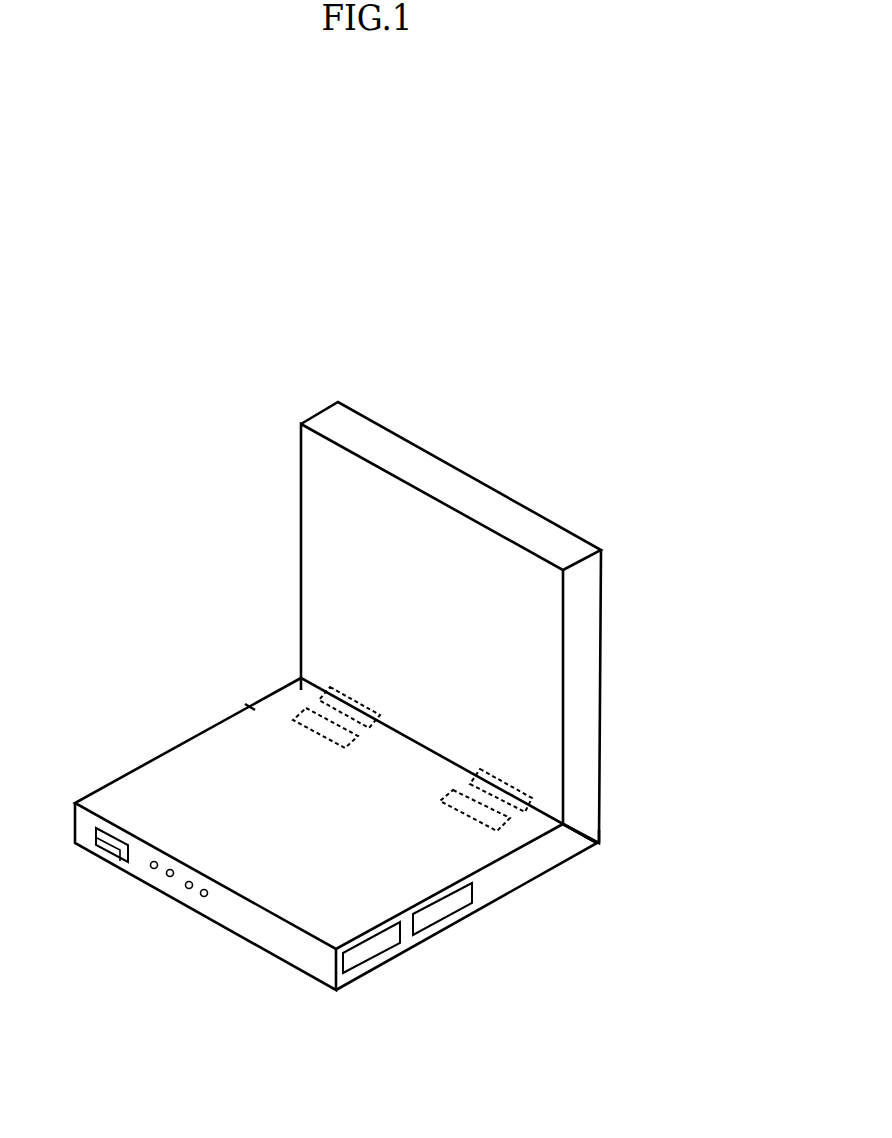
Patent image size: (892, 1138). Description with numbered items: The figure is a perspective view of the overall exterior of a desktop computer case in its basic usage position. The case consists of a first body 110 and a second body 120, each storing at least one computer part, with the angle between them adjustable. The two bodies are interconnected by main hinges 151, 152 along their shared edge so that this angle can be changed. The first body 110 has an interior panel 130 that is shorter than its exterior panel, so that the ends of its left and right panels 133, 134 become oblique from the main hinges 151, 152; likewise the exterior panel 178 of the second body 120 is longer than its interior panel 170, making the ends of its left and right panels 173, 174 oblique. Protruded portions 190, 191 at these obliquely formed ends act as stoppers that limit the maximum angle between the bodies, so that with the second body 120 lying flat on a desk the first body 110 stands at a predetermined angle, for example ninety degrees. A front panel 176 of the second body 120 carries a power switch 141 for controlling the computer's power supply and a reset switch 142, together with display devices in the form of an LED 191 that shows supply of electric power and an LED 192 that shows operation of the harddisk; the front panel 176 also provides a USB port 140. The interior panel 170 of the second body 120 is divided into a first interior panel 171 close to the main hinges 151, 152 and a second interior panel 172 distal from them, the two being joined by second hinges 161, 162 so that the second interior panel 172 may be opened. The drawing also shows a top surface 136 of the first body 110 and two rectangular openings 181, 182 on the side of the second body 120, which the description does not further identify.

The first body 110 is at (620, 658).
The second body 120 is at (500, 921).
The interior panel 130 is at (480, 556).
The left panel 133 is at (317, 485).
The right panel 134 is at (598, 577).
The top surface of display unit 136 is at (367, 423).
The USB port 140 is at (112, 848).
The power switch 141 is at (189, 888).
The reset switch 142 is at (204, 896).
The main hinge 151 is at (362, 704).
The main hinge 152 is at (500, 785).
The second hinge 161 is at (337, 738).
The second hinge 162 is at (470, 813).
The interior panel 170 is at (217, 622).
The first interior panel 171 is at (298, 692).
The second interior panel 172 is at (250, 708).
The left panel 173 is at (145, 787).
The right panel 174 is at (562, 857).
The front panel 176 is at (82, 847).
The exterior panel 178 is at (302, 957).
The first port 181 is at (383, 950).
The second port 182 is at (447, 913).
The protruded portion 190 is at (600, 833).
The protruded portion / LED 191 is at (169, 876).
The LED 192 is at (153, 868).